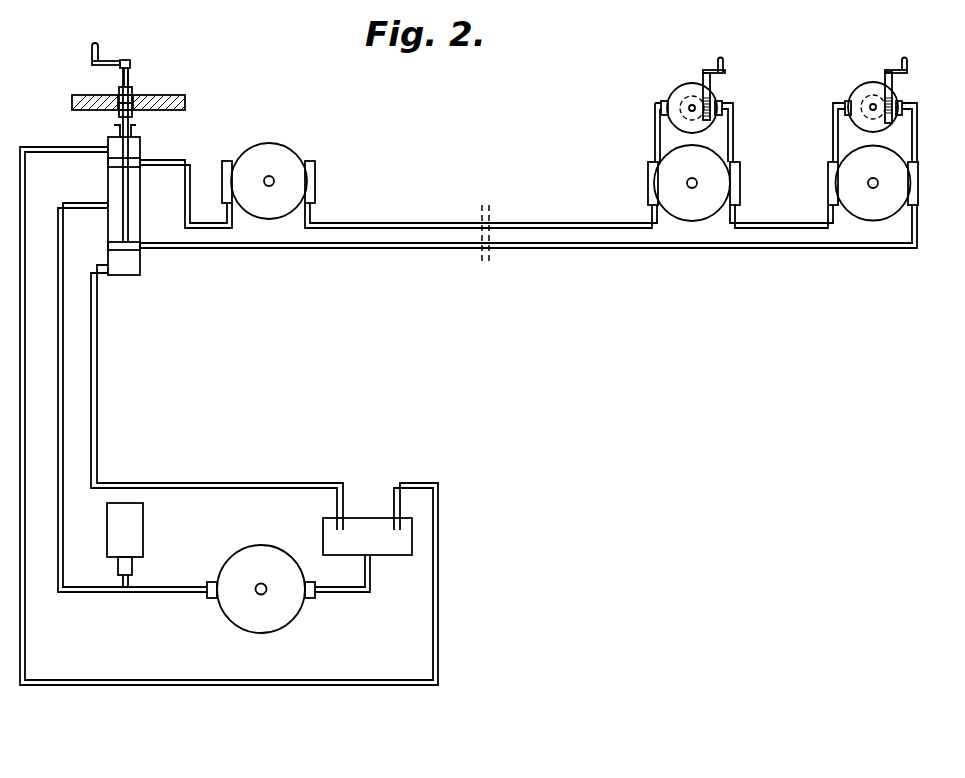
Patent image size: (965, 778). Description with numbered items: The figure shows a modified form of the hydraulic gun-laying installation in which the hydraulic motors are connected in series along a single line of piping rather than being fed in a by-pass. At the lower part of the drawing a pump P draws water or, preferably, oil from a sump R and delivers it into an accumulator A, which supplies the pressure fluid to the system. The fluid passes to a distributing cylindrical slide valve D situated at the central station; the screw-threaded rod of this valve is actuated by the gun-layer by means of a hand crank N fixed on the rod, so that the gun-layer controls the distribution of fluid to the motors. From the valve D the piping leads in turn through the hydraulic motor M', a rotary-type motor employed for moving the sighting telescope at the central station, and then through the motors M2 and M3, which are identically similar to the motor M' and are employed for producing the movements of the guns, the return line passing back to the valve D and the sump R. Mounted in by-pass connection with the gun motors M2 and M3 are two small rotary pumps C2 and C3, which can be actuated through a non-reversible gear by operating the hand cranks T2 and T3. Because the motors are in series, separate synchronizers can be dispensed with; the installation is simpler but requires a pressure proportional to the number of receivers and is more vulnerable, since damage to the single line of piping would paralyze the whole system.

The hand crank N is at (92, 52).
The distributing cylindrical slide valve D is at (133, 206).
The hydraulic motor M' is at (268, 195).
The motor M2 is at (685, 208).
The motor M3 is at (863, 200).
The small rotary pump C2 is at (680, 92).
The hand crank T2 is at (725, 65).
The small rotary pump C3 is at (860, 88).
The hand crank T3 is at (906, 63).
The accumulator A is at (123, 530).
The pump P is at (261, 557).
The sump R is at (362, 532).